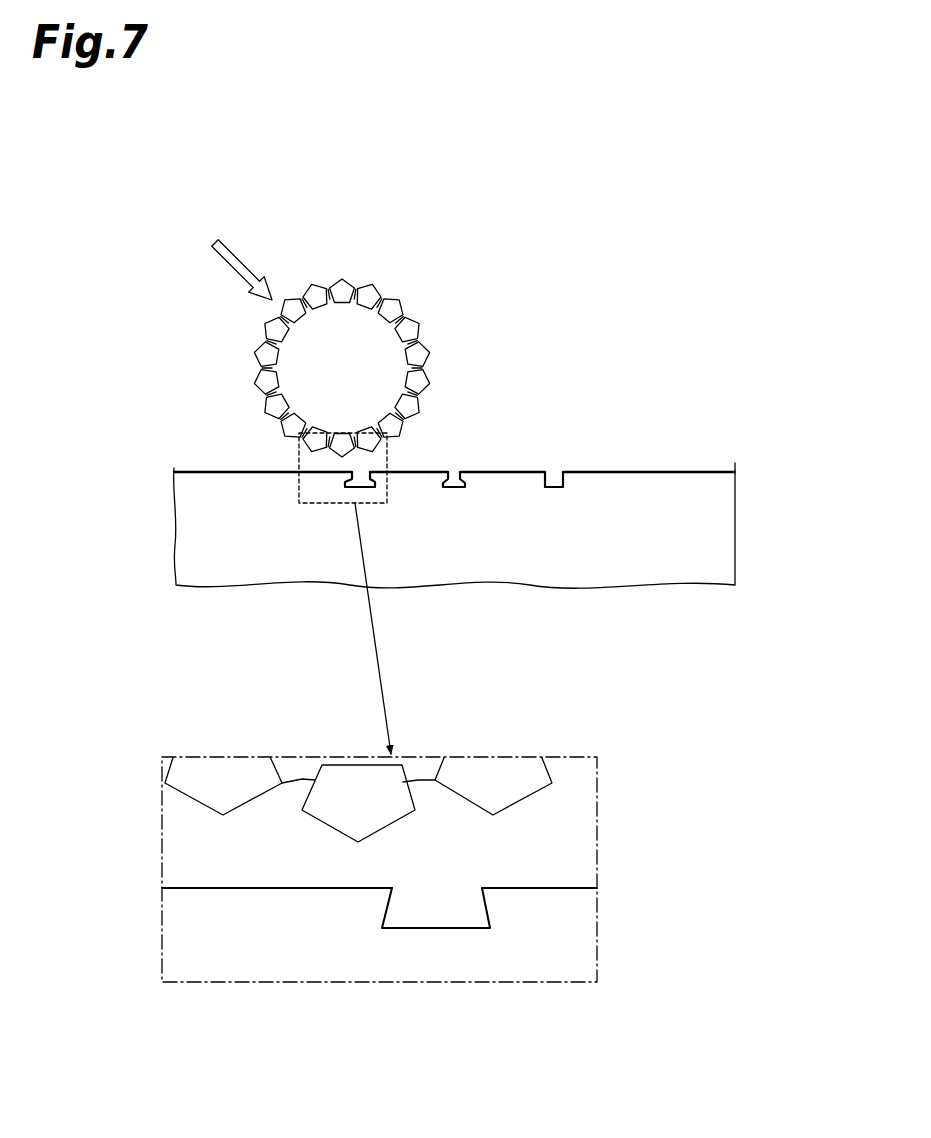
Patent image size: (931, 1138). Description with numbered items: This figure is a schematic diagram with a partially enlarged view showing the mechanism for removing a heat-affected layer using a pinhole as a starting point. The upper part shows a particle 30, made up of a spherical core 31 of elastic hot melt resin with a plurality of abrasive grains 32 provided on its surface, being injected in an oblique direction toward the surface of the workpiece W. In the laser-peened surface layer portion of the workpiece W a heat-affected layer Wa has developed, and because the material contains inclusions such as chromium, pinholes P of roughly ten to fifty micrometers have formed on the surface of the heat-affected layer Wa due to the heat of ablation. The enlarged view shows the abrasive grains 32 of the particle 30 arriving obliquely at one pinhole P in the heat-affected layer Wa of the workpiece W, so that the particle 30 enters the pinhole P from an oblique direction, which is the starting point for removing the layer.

The particle 30 is at (426, 273).
The core 31 is at (380, 362).
The abrasive grains 32 is at (317, 287).
The pinhole P is at (452, 471).
The workpiece W is at (622, 471).
The heat-affected layer Wa is at (700, 483).